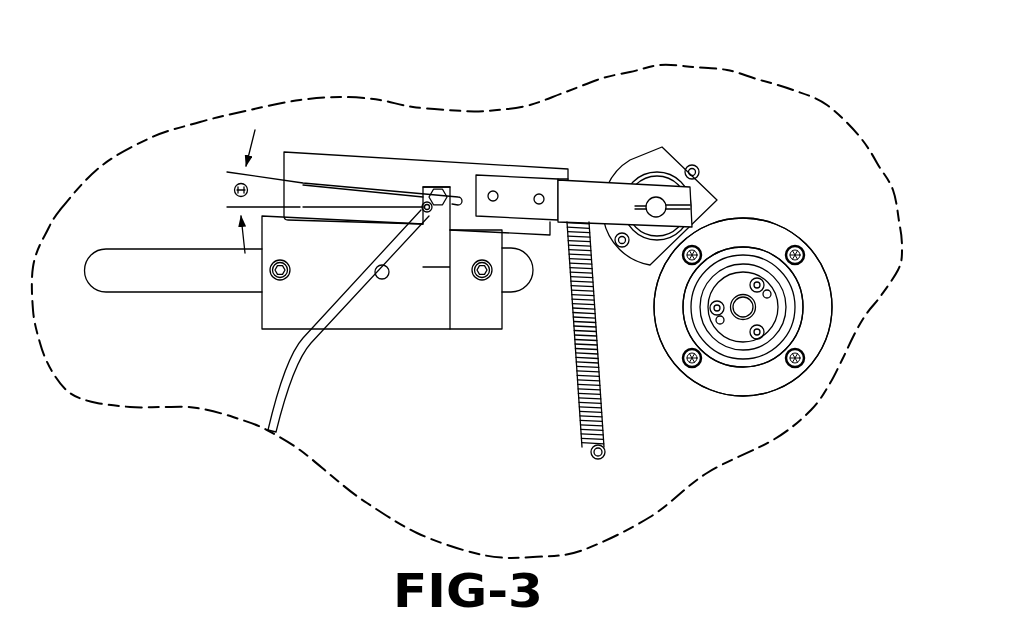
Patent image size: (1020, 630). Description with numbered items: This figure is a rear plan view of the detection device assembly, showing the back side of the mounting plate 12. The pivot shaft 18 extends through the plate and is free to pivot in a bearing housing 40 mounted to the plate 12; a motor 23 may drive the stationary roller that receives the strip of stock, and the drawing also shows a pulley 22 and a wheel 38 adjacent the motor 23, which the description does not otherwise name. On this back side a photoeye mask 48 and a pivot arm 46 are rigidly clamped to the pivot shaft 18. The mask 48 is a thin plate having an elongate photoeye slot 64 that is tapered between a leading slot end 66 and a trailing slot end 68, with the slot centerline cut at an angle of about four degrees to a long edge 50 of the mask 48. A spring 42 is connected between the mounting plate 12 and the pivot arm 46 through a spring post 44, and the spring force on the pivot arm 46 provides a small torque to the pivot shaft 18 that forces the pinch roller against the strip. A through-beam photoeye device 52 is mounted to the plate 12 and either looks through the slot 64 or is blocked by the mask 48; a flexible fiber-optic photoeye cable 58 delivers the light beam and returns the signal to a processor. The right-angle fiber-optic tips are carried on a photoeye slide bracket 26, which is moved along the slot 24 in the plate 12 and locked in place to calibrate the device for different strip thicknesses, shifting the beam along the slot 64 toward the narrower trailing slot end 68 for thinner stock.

The mounting plate 12 is at (753, 122).
The pivot shaft 18 is at (658, 203).
The pulley 22 is at (747, 307).
The motor 23 is at (793, 310).
The slot 24 is at (171, 250).
The photoeye slide bracket 26 is at (285, 302).
The pulley wheel 38 is at (743, 380).
The bearing housing 40 is at (703, 193).
The spring 42 is at (580, 350).
The spring post 44 is at (605, 448).
The pivot arm 46 is at (600, 202).
The photoeye mask 48 is at (447, 170).
The long edge 50 is at (548, 173).
The through-beam photoeye device 52 is at (430, 182).
The photoeye cable 58 is at (283, 382).
The photoeye slot 64 is at (352, 181).
The leading slot end 66 is at (473, 190).
The trailing slot end 68 is at (305, 182).